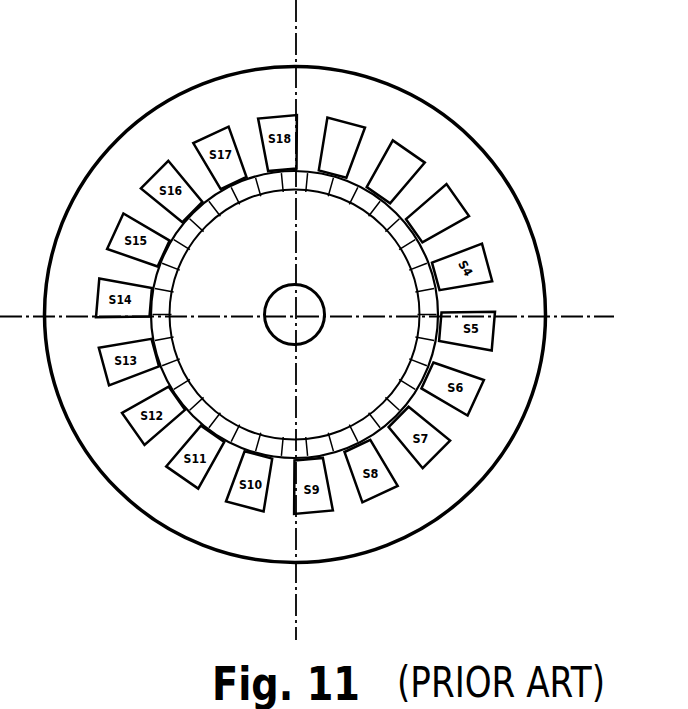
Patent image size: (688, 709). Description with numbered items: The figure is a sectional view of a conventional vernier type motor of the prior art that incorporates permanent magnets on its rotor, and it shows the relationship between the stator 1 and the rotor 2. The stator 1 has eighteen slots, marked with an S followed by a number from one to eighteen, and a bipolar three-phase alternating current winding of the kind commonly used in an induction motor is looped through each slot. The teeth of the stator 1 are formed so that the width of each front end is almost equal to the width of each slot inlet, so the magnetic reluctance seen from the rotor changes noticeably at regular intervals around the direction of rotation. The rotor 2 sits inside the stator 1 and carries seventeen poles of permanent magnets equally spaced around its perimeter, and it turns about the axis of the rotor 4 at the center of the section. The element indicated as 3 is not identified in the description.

The stator 1 is at (295, 281).
The rotor 2 is at (470, 173).
The slot 3 is at (384, 112).
The axis of the rotor 4 is at (365, 314).